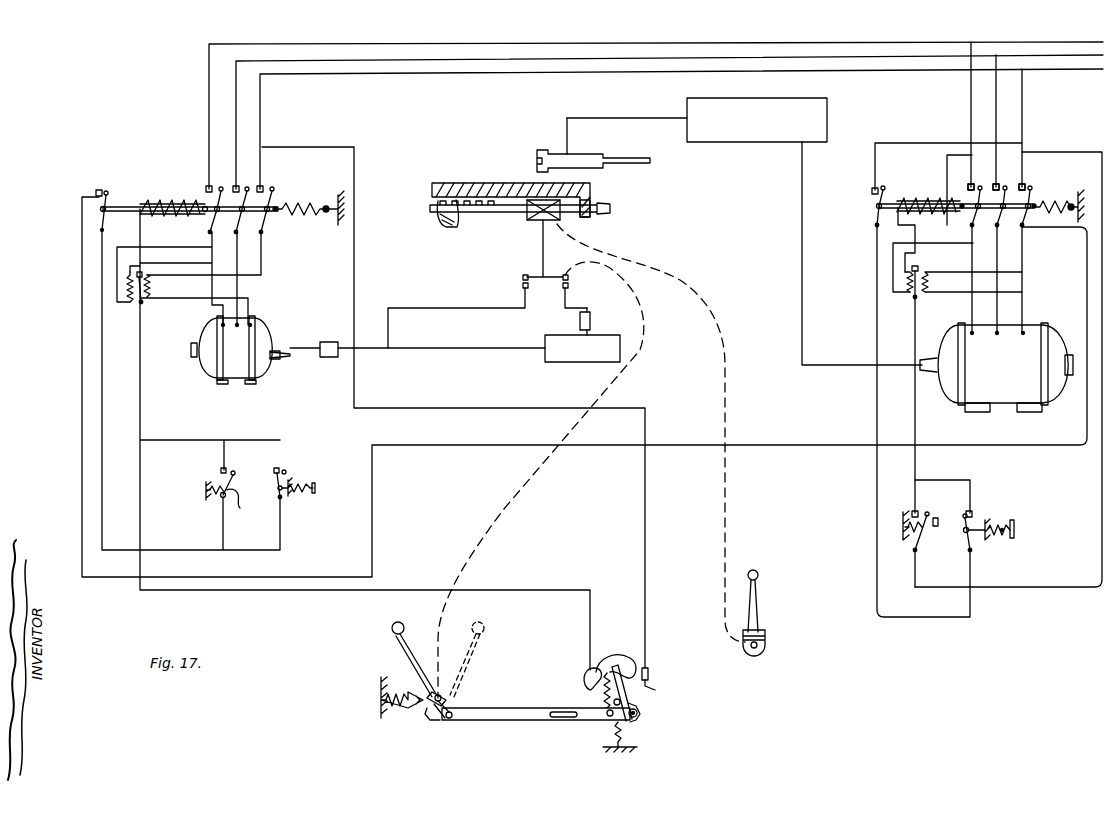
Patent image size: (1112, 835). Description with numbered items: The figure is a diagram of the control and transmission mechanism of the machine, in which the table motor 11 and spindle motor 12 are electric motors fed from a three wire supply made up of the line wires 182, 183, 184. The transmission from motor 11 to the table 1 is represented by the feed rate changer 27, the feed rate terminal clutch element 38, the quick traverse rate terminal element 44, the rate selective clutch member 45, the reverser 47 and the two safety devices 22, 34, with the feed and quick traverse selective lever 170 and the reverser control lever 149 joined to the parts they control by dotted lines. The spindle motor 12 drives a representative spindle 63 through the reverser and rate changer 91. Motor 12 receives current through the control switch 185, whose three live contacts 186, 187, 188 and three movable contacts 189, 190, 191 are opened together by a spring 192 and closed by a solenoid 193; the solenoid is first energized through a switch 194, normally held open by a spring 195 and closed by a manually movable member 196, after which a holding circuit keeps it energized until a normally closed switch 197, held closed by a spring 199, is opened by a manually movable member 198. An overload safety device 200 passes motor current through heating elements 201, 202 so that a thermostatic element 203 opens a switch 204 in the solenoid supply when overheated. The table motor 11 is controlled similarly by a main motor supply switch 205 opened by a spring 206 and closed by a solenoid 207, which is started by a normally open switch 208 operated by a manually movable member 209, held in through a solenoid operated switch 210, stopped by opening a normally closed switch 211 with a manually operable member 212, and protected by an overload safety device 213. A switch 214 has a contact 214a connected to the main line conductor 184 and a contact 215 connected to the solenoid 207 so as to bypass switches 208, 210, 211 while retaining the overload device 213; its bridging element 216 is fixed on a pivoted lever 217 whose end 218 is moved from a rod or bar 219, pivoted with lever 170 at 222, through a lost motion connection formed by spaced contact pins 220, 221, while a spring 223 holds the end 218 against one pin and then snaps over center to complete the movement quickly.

The table 1 is at (490, 184).
The table motor 11 is at (243, 356).
The spindle motor 12 is at (1018, 346).
The safety device 22 is at (329, 342).
The feed rate changer 27 is at (582, 362).
The safety device 34 is at (590, 321).
The feed rate terminal clutch element 38 is at (568, 286).
The quick traverse rate terminal element 44 is at (523, 286).
The rate selective clutch member 45 is at (541, 273).
The reverser 47 is at (532, 222).
The spindle 63 is at (586, 154).
The reverser and rate changer 91 is at (768, 142).
The reverser control lever 149 is at (757, 612).
The feed and quick traverse selective lever 170 is at (402, 672).
The line wire 182 is at (650, 43).
The line wire 183 is at (660, 56).
The line wire 184 is at (707, 70).
The control switch 185 is at (1028, 146).
The live contact 186 is at (972, 186).
The live contact 187 is at (981, 199).
The live contact 188 is at (1027, 184).
The movable contact 189 is at (987, 178).
The movable contact 190 is at (1010, 186).
The movable contact 191 is at (1032, 190).
The spring 192 is at (1070, 200).
The solenoid 193 is at (928, 188).
The switch 194 is at (896, 504).
The spring 195 is at (918, 532).
The manually movable member 196 is at (940, 530).
The switch 197 is at (1002, 515).
The manually movable member 198 is at (1012, 527).
The spring 199 is at (1003, 538).
The overload safety device 200 is at (873, 286).
The heating element 201 is at (938, 292).
The heating element 202 is at (906, 292).
The thermostatic element 203 is at (918, 300).
The switch 204 is at (920, 268).
The main motor supply switch 205 is at (276, 182).
The spring 206 is at (310, 222).
The solenoid 207 is at (160, 188).
The switch 208 is at (220, 472).
The manually movable member 209 is at (234, 498).
The solenoid operated switch 210 is at (99, 190).
The switch 211 is at (280, 472).
The manually operable member 212 is at (313, 490).
The overload safety device 213 is at (142, 304).
The switch 214 is at (672, 708).
The contact 214a is at (655, 680).
The contact 215 is at (588, 675).
The bridging element 216 is at (611, 665).
The pivoted lever 217 is at (620, 692).
The lever end 218 is at (638, 730).
The rod or bar 219 is at (532, 722).
The contact pin 220 is at (608, 718).
The contact pin 221 is at (640, 714).
The pivot 222 is at (448, 720).
The spring 223 is at (604, 698).